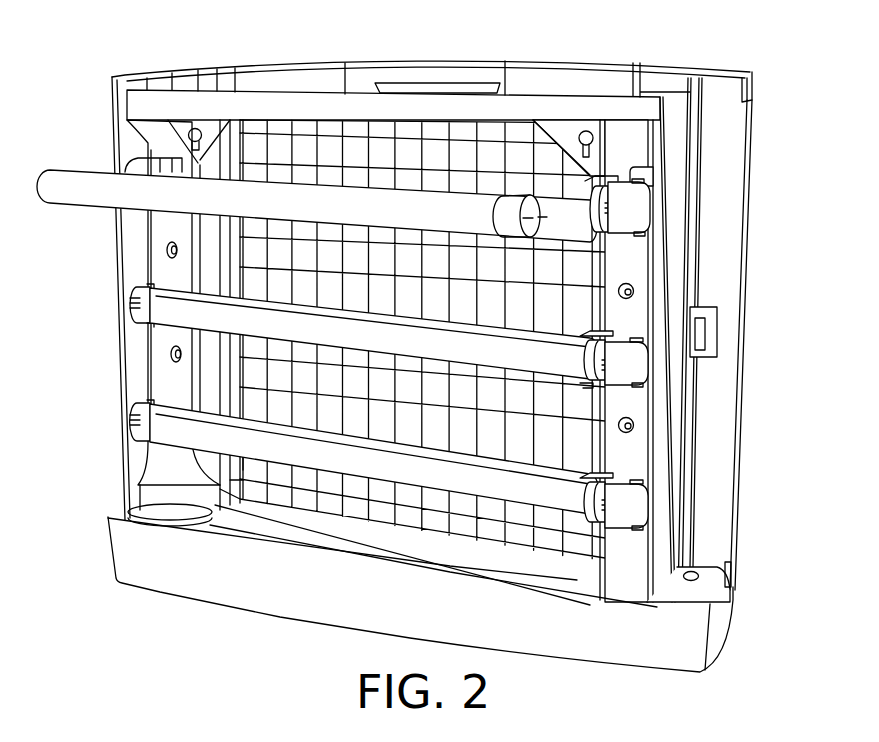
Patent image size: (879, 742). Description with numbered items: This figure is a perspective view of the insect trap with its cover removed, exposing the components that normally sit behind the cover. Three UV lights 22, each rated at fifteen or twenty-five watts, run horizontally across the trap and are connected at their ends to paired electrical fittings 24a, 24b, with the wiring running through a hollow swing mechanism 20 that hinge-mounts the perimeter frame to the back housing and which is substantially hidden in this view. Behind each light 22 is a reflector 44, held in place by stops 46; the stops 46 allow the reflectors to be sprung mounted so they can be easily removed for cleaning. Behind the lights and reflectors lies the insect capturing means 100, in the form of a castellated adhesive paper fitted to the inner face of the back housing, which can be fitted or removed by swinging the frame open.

The insect capturing means 100 is at (432, 331).
The swing mechanism 20 is at (118, 552).
The UV light 22 is at (385, 197).
The electrical fitting 24a is at (640, 367).
The electrical fitting 24b is at (128, 313).
The reflector 44 is at (582, 200).
The stop 46 is at (628, 167).